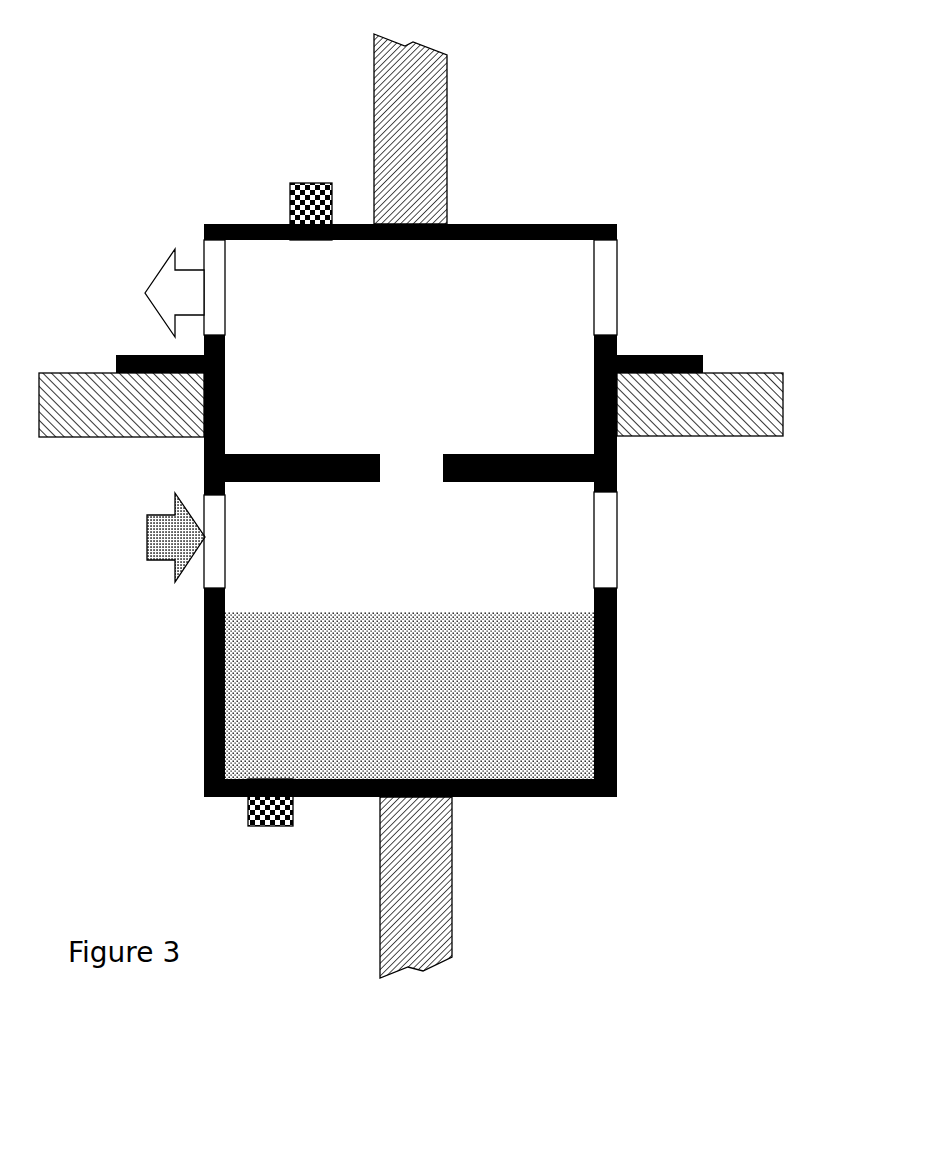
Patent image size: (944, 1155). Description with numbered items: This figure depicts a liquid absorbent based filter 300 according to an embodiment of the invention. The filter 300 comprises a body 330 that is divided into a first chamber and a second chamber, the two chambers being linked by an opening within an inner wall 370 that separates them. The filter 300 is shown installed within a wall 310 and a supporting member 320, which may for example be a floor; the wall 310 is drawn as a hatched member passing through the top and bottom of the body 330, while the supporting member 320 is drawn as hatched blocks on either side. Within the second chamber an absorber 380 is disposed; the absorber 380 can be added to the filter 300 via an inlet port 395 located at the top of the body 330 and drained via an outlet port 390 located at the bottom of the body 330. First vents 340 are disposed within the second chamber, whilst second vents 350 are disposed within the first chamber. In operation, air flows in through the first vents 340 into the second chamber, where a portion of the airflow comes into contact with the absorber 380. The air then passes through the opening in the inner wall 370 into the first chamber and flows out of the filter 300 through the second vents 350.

The liquid absorbent based filter 300 is at (411, 506).
The wall 310 is at (453, 123).
The supporting member 320 is at (726, 433).
The body 330 is at (243, 223).
The first vents 340 is at (610, 543).
The second vents 350 is at (608, 303).
The inner wall 370 is at (505, 450).
The absorber 380 is at (568, 727).
The outlet port 390 is at (252, 837).
The inlet port 395 is at (312, 170).